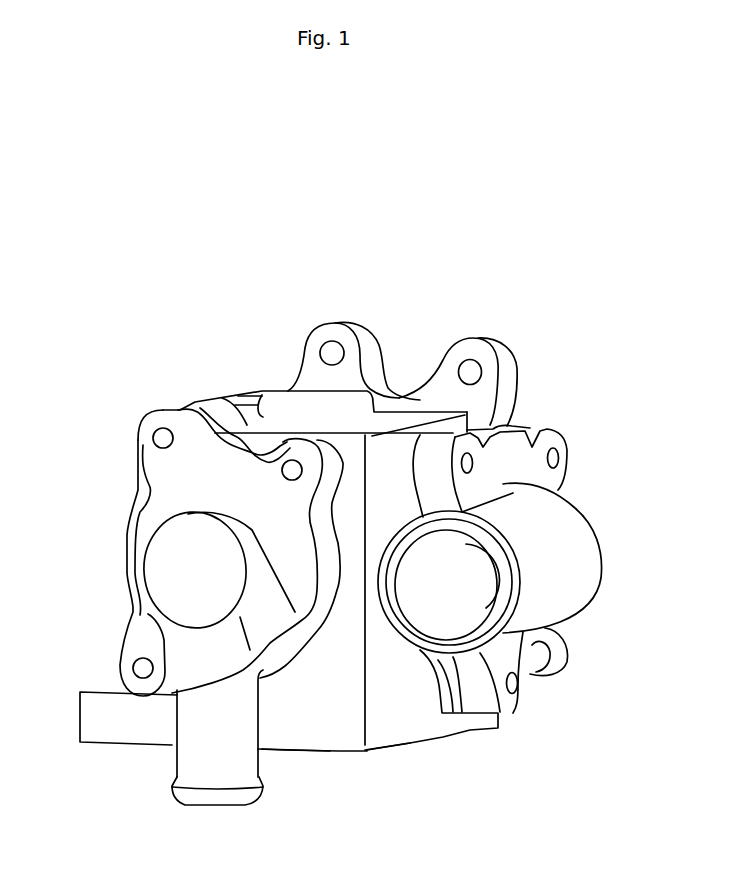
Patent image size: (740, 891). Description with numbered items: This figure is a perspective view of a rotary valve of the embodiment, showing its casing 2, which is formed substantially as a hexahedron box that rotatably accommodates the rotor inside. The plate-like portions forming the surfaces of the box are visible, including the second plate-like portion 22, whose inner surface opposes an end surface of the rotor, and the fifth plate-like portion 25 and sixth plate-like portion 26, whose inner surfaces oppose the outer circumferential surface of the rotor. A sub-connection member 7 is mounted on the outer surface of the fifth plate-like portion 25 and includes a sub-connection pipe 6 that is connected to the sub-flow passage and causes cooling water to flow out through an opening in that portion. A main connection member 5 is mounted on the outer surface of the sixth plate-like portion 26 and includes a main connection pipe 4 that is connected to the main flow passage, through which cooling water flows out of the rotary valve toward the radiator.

The casing 2 is at (393, 457).
The main connection pipe 4 is at (560, 595).
The main connection member 5 is at (515, 453).
The sub-connection pipe 6 is at (203, 750).
The sub-connection member 7 is at (172, 484).
The second plate-like portion 22 is at (283, 407).
The fifth plate-like portion 25 is at (318, 730).
The sixth plate-like portion 26 is at (393, 735).